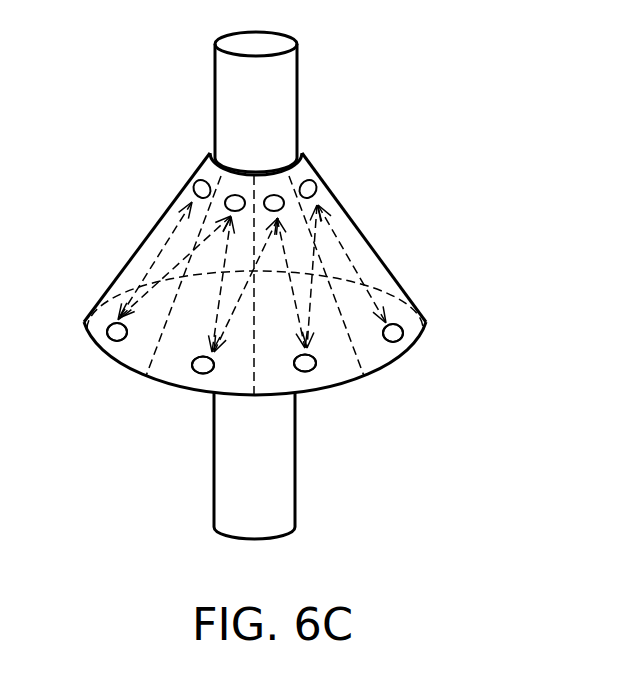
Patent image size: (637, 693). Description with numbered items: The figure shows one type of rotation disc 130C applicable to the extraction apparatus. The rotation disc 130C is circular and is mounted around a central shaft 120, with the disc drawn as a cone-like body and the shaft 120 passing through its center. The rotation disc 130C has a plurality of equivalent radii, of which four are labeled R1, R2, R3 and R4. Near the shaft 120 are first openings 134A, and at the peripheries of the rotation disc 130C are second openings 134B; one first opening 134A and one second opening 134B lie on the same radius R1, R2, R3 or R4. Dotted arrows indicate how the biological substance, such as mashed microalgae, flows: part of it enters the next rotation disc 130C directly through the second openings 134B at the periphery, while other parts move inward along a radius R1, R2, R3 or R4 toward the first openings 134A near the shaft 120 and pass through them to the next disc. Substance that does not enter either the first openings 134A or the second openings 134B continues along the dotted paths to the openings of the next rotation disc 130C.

The shaft 120 is at (282, 108).
The rotation disc 130C is at (359, 246).
The first openings 134A is at (314, 190).
The second openings 134B is at (402, 333).
The radius R1 is at (392, 356).
The radius R2 is at (324, 378).
The radius R3 is at (182, 378).
The radius R4 is at (115, 355).